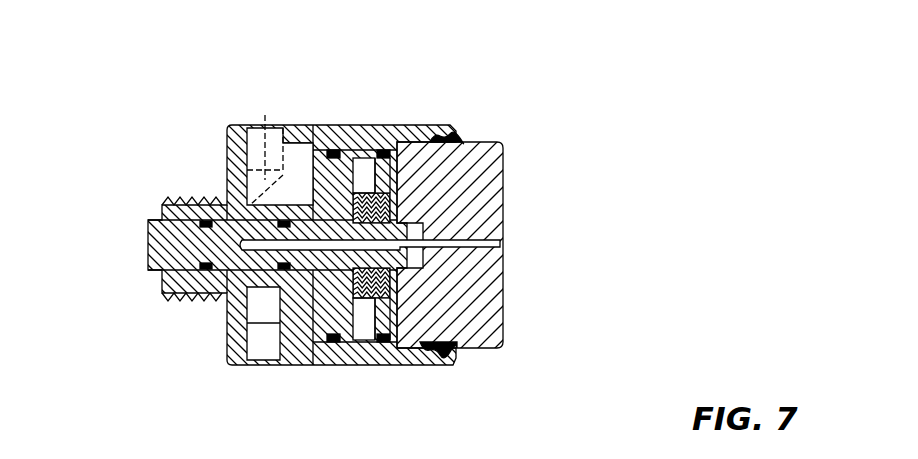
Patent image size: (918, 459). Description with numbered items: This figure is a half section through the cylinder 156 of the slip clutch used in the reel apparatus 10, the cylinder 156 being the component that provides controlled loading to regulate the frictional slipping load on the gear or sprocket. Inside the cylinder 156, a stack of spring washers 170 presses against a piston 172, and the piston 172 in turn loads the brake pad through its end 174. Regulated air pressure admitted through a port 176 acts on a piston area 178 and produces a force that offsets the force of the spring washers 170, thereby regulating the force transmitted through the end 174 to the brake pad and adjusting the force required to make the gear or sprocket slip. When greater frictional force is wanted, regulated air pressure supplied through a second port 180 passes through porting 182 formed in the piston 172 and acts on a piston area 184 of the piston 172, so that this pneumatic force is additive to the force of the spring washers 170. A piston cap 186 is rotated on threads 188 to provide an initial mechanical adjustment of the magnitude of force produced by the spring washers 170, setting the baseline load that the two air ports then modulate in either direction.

The reel apparatus 10 is at (632, 104).
The cylinder 156 is at (647, 181).
The spring washers 170 is at (397, 283).
The piston 172 is at (347, 365).
The end 174 is at (148, 240).
The port 176 is at (270, 127).
The piston area 178 is at (317, 365).
The port 180 is at (268, 330).
The porting 182 is at (480, 247).
The piston area 184 is at (363, 125).
The piston cap 186 is at (497, 305).
The threads 188 is at (477, 132).